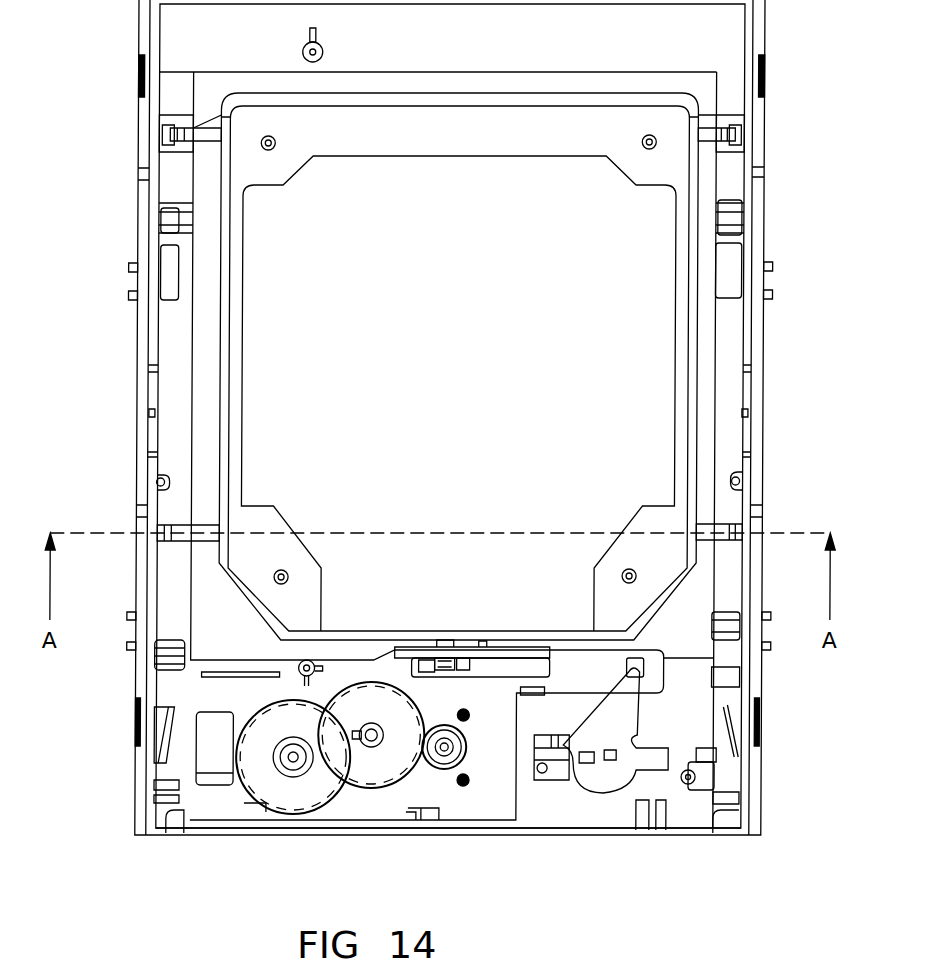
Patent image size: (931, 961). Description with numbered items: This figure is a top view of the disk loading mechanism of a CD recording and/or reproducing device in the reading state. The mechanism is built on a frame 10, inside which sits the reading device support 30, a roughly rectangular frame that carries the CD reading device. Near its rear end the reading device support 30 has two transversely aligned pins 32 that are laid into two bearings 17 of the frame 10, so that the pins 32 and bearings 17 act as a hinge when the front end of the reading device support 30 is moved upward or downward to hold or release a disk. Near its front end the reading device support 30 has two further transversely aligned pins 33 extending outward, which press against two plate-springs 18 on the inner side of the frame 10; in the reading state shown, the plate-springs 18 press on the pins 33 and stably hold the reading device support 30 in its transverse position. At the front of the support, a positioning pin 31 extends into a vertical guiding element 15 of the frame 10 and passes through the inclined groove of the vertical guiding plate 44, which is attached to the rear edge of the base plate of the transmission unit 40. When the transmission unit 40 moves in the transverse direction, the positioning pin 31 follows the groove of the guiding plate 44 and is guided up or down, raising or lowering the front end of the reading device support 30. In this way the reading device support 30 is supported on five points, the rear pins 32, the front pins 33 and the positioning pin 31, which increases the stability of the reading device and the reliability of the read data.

The frame 10 is at (757, 420).
The vertical guiding element 15 is at (470, 668).
The bearings 17 is at (172, 118).
The plate-springs 18 is at (158, 527).
The reading device support 30 is at (226, 325).
The positioning pin 31 is at (445, 672).
The pins 32 is at (182, 136).
The pins 33 is at (177, 523).
The transmission unit 40 is at (392, 799).
The vertical guiding plate 44 is at (495, 653).